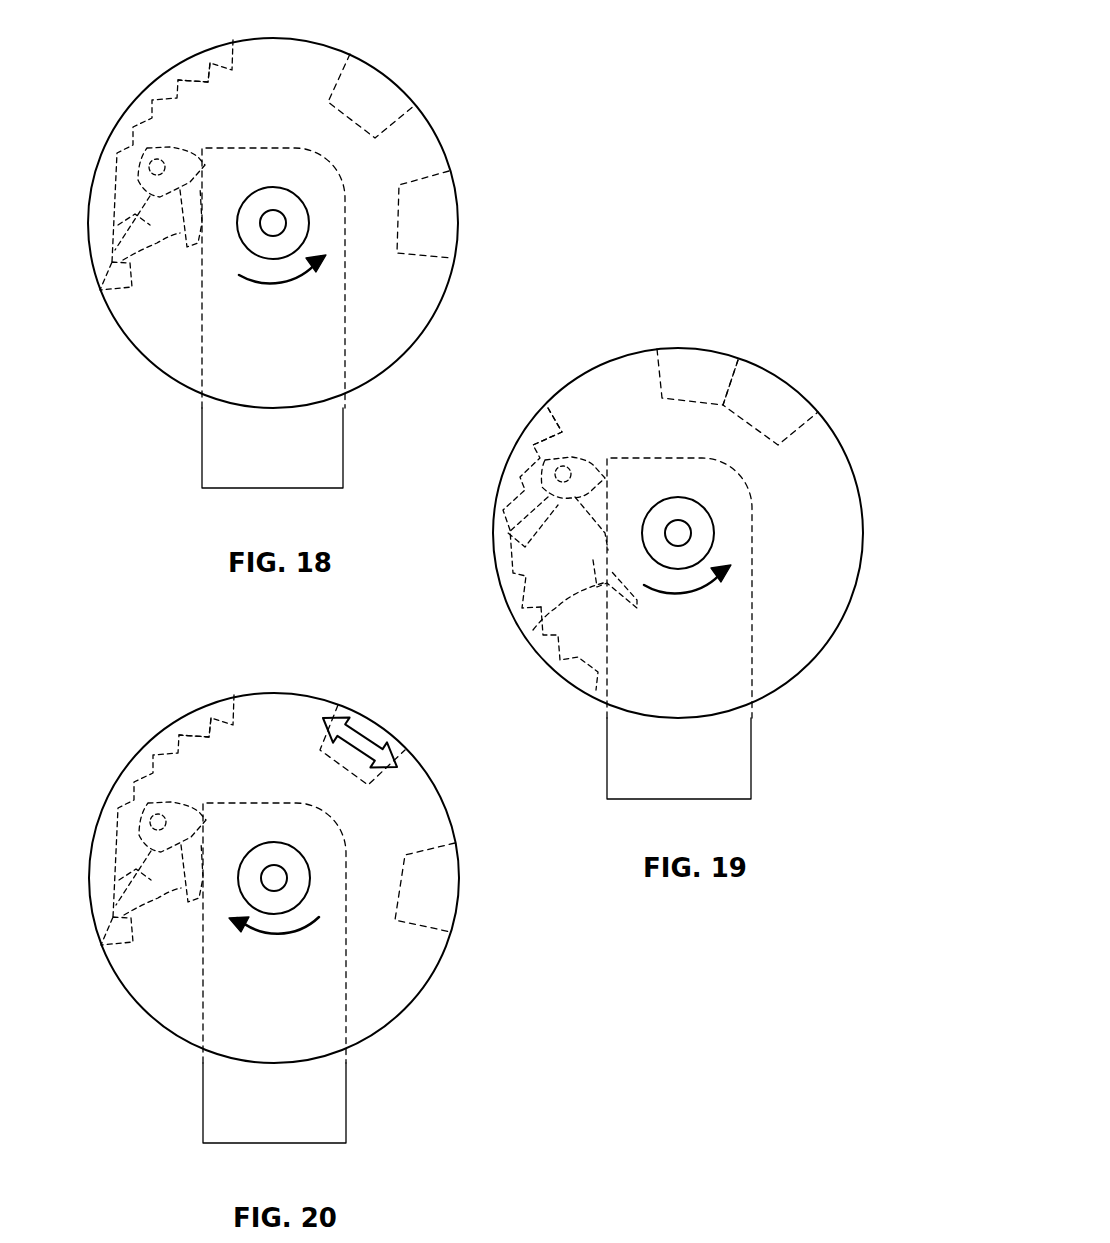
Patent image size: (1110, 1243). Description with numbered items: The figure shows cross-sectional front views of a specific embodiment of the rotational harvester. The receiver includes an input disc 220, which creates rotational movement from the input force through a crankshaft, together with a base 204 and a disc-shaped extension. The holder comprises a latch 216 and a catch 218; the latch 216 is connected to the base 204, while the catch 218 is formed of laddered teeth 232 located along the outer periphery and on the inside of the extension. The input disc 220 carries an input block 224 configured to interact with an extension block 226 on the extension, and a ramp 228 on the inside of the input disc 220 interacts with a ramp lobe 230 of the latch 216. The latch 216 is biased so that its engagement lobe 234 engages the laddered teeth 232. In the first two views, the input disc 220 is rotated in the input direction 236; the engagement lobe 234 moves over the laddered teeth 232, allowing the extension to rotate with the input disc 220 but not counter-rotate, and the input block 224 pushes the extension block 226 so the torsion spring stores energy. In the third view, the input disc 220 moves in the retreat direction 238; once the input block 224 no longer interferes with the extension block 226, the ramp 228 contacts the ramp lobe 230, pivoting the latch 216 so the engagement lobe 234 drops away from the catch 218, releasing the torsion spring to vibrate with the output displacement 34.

In FIG. 20, the output displacement 34 is at (366, 732).
In FIG. 18, the base 204 is at (335, 468).
In FIG. 19, the base 204 is at (735, 760).
In FIG. 20, the base 204 is at (333, 1102).
In FIG. 18, the latch 216 is at (148, 178).
In FIG. 19, the latch 216 is at (557, 492).
In FIG. 20, the latch 216 is at (127, 848).
In FIG. 18, the catch 218 is at (190, 72).
In FIG. 19, the catch 218 is at (538, 438).
In FIG. 20, the catch 218 is at (181, 703).
In FIG. 18, the input disc 220 is at (410, 305).
In FIG. 19, the input disc 220 is at (825, 610).
In FIG. 20, the input disc 220 is at (388, 1003).
In FIG. 18, the input block 224 is at (440, 198).
In FIG. 19, the input block 224 is at (762, 388).
In FIG. 20, the input block 224 is at (447, 895).
In FIG. 18, the extension block 226 is at (385, 92).
In FIG. 19, the extension block 226 is at (692, 357).
In FIG. 20, the extension block 226 is at (378, 730).
In FIG. 18, the ramp 228 is at (105, 285).
In FIG. 19, the ramp 228 is at (527, 632).
In FIG. 20, the ramp 228 is at (85, 933).
In FIG. 18, the ramp lobe 230 is at (197, 146).
In FIG. 19, the ramp lobe 230 is at (590, 460).
In FIG. 20, the ramp lobe 230 is at (198, 803).
In FIG. 18, the laddered teeth 232 is at (172, 92).
In FIG. 19, the laddered teeth 232 is at (540, 455).
In FIG. 20, the laddered teeth 232 is at (153, 806).
In FIG. 18, the engagement lobe 234 is at (118, 226).
In FIG. 19, the engagement lobe 234 is at (512, 542).
In FIG. 20, the engagement lobe 234 is at (112, 892).
In FIG. 18, the input direction 236 is at (278, 288).
In FIG. 19, the input direction 236 is at (698, 600).
In FIG. 20, the retreat direction 238 is at (284, 940).